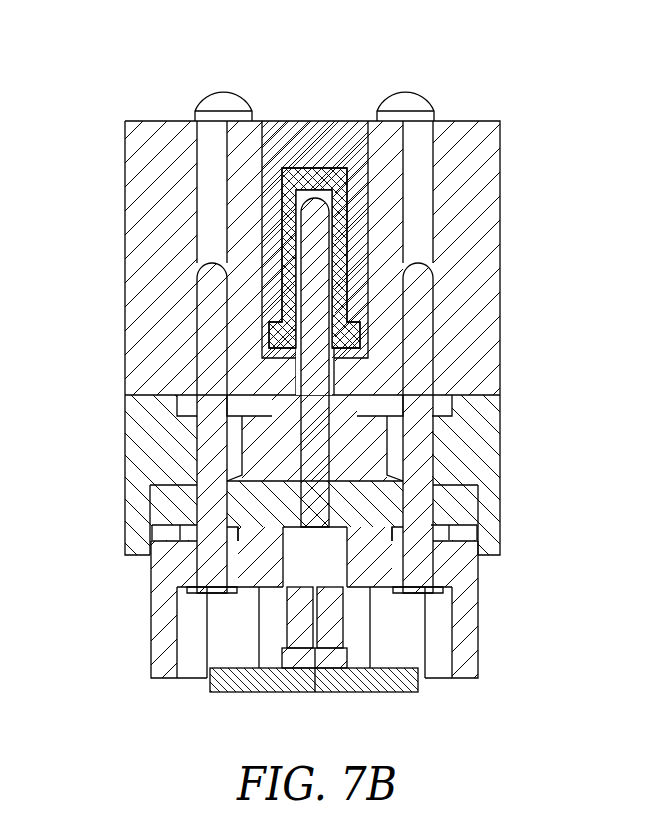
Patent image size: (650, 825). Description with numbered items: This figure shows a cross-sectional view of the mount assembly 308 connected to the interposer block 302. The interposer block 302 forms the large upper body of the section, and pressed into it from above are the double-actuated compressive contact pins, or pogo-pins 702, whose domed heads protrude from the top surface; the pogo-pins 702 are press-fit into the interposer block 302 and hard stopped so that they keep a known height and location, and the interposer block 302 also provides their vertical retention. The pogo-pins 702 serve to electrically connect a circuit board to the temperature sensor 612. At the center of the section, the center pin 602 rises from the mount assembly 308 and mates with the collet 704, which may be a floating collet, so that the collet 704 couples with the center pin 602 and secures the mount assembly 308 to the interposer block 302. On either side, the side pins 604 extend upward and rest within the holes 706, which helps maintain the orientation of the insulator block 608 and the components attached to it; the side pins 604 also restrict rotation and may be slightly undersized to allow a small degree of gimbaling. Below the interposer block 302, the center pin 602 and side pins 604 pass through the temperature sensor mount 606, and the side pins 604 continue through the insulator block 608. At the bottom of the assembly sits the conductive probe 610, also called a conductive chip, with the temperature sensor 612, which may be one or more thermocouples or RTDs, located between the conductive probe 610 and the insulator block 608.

The interposer block 302 is at (125, 183).
The mount assembly 308 is at (545, 592).
The center pin 602 is at (314, 198).
The side pins 604 is at (220, 263).
The temperature sensor mount 606 is at (500, 517).
The insulator block 608 is at (150, 635).
The conductive probe 610 is at (358, 692).
The temperature sensor 612 is at (350, 657).
The pogo-pins 702 is at (226, 90).
The collet 704 is at (350, 247).
The holes 706 is at (195, 195).